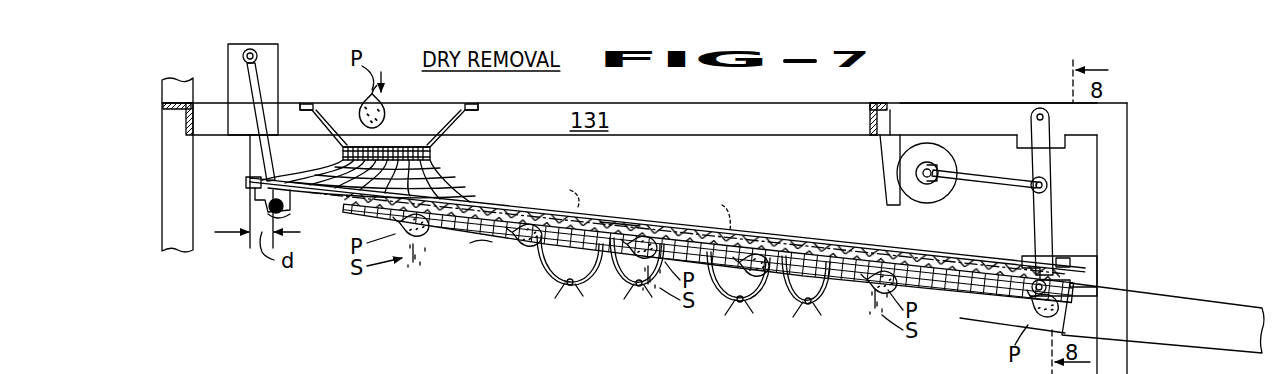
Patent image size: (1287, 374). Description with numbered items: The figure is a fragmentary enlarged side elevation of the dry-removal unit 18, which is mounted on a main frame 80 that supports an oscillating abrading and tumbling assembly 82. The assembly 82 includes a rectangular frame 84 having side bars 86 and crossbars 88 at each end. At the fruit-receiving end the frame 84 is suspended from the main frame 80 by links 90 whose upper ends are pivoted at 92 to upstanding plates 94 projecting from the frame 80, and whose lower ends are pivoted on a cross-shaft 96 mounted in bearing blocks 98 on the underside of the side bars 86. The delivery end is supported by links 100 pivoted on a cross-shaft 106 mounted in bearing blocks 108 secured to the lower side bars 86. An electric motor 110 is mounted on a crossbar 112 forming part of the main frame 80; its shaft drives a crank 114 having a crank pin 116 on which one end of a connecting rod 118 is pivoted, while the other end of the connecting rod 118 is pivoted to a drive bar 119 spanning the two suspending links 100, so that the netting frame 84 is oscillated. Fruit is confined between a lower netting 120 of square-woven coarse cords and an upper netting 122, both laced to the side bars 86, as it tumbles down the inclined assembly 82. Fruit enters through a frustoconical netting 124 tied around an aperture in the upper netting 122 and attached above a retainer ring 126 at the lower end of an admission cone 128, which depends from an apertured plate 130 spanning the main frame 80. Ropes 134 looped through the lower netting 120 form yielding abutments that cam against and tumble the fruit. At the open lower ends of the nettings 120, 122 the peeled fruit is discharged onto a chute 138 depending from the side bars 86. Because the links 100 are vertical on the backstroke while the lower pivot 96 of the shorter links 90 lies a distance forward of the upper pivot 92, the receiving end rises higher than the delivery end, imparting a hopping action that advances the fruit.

The dry-removal unit 18 is at (920, 68).
The frame 80 is at (1130, 157).
The oscillating abrading and tumbling assembly 82 is at (658, 202).
The rectangular frame 84 is at (528, 214).
The side bars 86 is at (675, 235).
The crossbars 88 is at (258, 175).
The links 90 is at (262, 84).
The pivot 92 is at (257, 51).
The upstanding plates 94 is at (227, 57).
The cross-shaft 96 is at (290, 215).
The bearing blocks 98 is at (284, 203).
The links 100 is at (1033, 213).
The cross-shaft 106 is at (1065, 279).
The bearing blocks 108 is at (1088, 297).
The electric motor 110 is at (923, 145).
The crossbar 112 is at (188, 117).
The crank 114 is at (935, 168).
The crank pin 116 is at (918, 173).
The connecting rod 118 is at (1003, 182).
The drive bar 119 is at (1050, 185).
The lower netting 120 is at (480, 245).
The upper netting 122 is at (600, 222).
The frustoconical netting 124 is at (448, 185).
The retainer ring 126 is at (440, 158).
The admission cone 128 is at (413, 143).
The apertured plate 130 is at (470, 106).
The ropes 134 is at (562, 285).
The chute 138 is at (1175, 305).